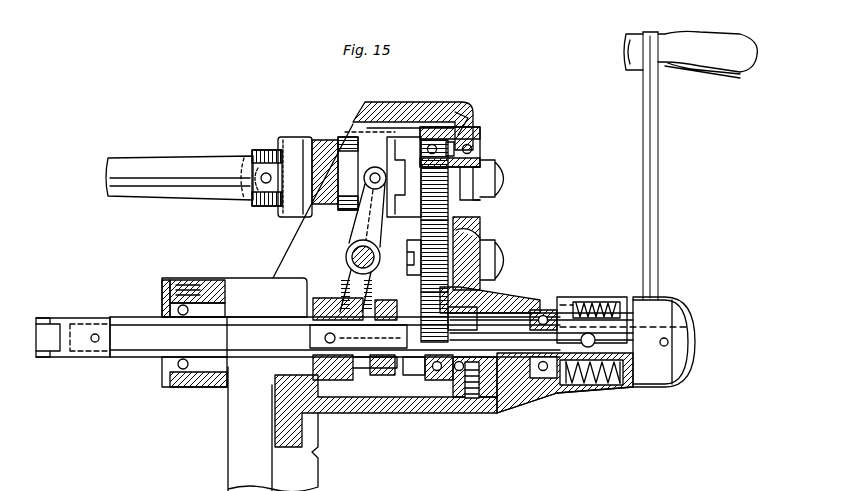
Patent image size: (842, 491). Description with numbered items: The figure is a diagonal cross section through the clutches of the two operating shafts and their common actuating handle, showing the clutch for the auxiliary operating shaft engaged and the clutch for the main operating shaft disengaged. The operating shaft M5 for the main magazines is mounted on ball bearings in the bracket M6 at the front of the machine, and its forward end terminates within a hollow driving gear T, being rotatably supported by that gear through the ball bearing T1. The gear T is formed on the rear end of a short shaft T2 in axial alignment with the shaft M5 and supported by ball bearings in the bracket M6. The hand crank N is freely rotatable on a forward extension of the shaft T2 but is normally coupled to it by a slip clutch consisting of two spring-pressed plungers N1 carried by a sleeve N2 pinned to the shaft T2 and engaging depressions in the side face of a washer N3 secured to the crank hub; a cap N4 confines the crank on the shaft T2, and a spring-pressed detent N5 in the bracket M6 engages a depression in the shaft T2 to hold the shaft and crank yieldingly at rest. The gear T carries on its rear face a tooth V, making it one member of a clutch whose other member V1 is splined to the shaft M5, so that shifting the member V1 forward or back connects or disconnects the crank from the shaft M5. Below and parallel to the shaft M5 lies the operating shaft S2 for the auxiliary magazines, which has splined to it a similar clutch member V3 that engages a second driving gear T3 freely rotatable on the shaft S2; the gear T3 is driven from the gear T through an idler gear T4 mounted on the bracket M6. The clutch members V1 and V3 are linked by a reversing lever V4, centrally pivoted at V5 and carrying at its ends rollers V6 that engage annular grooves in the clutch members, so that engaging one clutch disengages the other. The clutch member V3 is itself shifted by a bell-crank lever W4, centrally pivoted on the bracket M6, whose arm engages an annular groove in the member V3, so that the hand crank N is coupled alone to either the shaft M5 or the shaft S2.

The operating shaft S2 is at (217, 163).
The bell-crank lever W4 is at (330, 165).
The clutch member V3 is at (346, 190).
The rollers V6 is at (348, 204).
The reversing lever V4 is at (356, 228).
The pivot V5 is at (350, 258).
The clutch member V1 is at (326, 374).
The tooth V is at (414, 374).
The driving gear T is at (438, 387).
The ball bearing T1 is at (427, 376).
The short shaft T2 is at (511, 332).
The second driving gear T3 is at (457, 135).
The idler gear T4 is at (441, 262).
The operating shaft M5 is at (152, 346).
The bracket M6 is at (291, 442).
The hand crank N is at (659, 224).
The spring-pressed plungers N1 is at (620, 378).
The sleeve N2 is at (574, 304).
The washer N3 is at (632, 387).
The cap N4 is at (675, 314).
The spring-pressed detent N5 is at (473, 368).